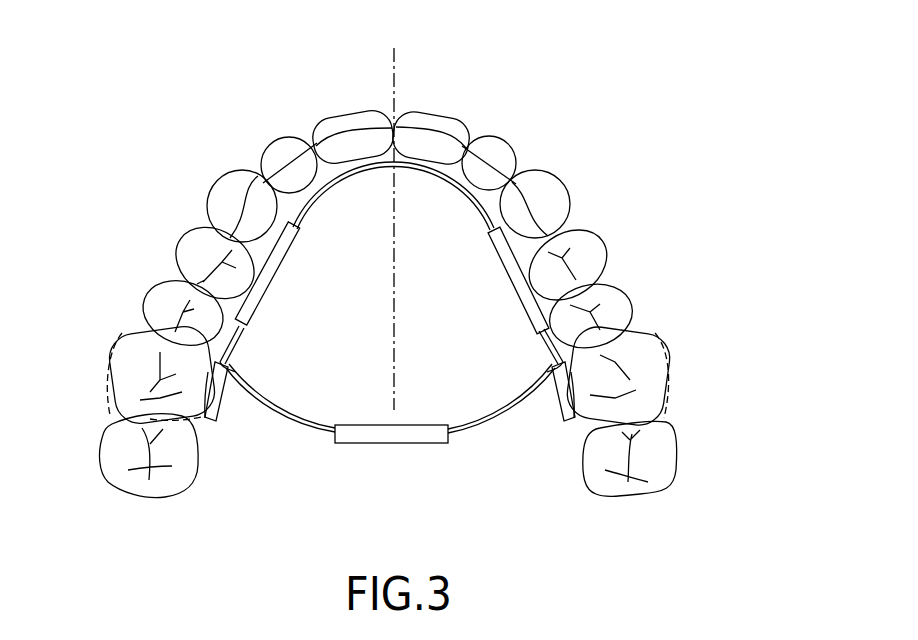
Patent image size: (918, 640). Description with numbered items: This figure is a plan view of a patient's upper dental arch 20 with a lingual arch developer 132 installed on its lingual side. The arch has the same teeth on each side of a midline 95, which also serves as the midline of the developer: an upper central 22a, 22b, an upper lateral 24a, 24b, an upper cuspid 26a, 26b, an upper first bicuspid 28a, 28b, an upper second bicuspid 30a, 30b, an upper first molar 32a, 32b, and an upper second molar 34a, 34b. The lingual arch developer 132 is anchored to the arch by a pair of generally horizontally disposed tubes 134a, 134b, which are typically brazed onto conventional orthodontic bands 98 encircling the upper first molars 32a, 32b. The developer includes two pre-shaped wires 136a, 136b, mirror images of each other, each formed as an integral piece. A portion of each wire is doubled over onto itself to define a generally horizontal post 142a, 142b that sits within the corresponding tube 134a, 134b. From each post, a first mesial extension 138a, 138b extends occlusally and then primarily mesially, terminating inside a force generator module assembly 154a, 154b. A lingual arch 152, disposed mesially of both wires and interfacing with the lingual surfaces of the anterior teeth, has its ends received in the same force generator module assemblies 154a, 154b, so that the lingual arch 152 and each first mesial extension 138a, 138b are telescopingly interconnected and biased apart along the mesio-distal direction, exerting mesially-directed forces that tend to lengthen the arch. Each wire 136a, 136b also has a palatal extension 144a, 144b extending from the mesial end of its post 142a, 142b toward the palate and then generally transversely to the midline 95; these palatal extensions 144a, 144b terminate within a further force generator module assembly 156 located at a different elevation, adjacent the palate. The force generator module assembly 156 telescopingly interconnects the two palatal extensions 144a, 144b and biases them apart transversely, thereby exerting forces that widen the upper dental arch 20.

The upper dental arch 20 is at (673, 345).
The upper central 22a is at (442, 113).
The upper central 22b is at (341, 112).
The upper lateral 24a is at (510, 142).
The upper lateral 24b is at (268, 144).
The upper cuspid 26a is at (563, 193).
The upper cuspid 26b is at (210, 185).
The upper first bicuspid 28a is at (600, 242).
The upper first bicuspid 28b is at (178, 244).
The upper second bicuspid 30a is at (634, 298).
The upper second bicuspid 30b is at (146, 293).
The upper first molar 32a is at (648, 383).
The upper first molar 32b is at (132, 370).
The upper second molar 34a is at (675, 448).
The upper second molar 34b is at (102, 448).
The midline 95 is at (396, 57).
The orthodontic band 98 is at (118, 333).
The lingual arch developer 132 is at (341, 190).
The lingual arch 152 is at (433, 183).
The force generator module assembly 154a is at (508, 290).
The force generator module assembly 154b is at (276, 272).
The first mesial extension 138a is at (533, 340).
The first mesial extension 138b is at (242, 338).
The pre-shaped wire 136a is at (547, 360).
The pre-shaped wire 136b is at (231, 359).
The tube 134a is at (553, 393).
The tube 134b is at (224, 405).
The post 142a is at (566, 422).
The post 142b is at (211, 422).
The palatal extension 144a is at (490, 421).
The palatal extension 144b is at (292, 428).
The force generator module assembly 156 is at (408, 444).